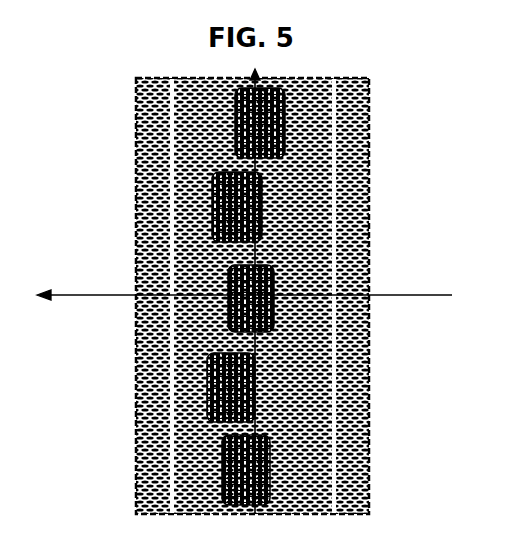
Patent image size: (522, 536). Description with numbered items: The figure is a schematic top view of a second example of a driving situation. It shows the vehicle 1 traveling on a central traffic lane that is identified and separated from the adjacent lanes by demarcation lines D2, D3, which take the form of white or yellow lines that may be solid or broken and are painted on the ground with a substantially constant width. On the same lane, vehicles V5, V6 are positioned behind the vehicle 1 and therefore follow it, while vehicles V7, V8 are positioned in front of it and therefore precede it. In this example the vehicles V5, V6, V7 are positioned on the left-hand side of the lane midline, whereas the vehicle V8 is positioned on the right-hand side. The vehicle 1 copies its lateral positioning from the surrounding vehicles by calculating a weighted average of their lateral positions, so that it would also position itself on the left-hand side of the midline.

The vehicle 1 is at (274, 277).
The vehicle V5 is at (270, 457).
The vehicle V6 is at (255, 375).
The vehicle V7 is at (262, 195).
The vehicle V8 is at (284, 120).
The demarcation line D2 is at (170, 470).
The demarcation line D3 is at (335, 497).